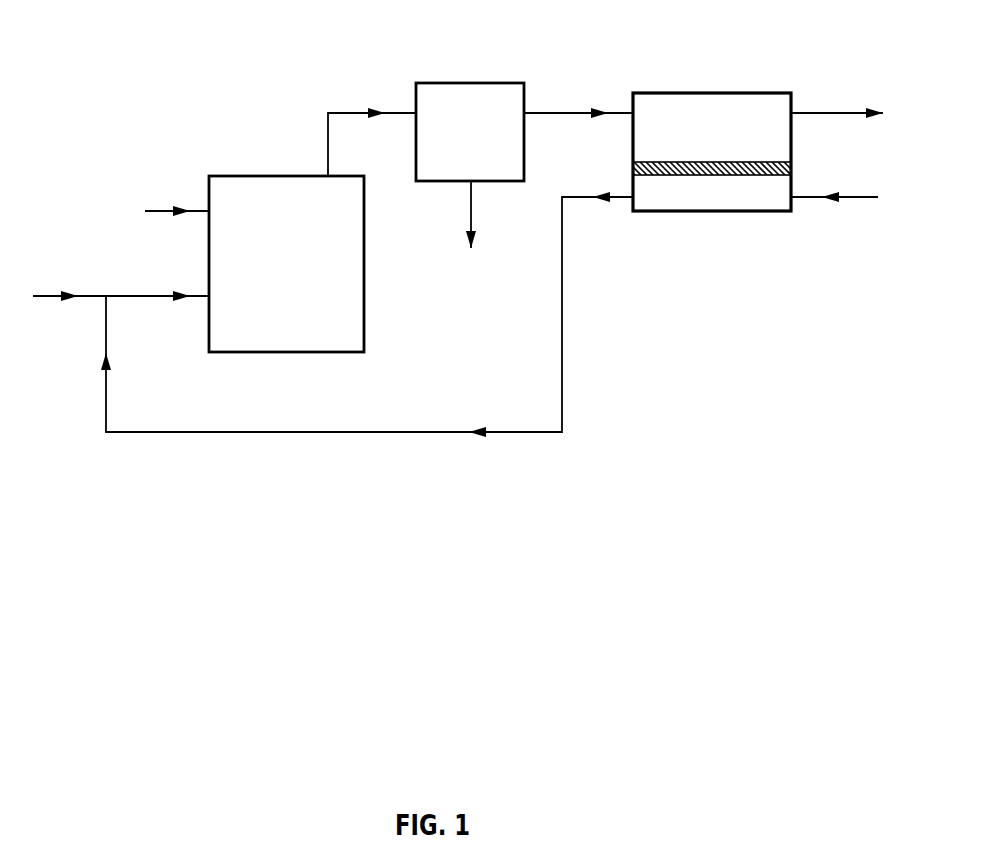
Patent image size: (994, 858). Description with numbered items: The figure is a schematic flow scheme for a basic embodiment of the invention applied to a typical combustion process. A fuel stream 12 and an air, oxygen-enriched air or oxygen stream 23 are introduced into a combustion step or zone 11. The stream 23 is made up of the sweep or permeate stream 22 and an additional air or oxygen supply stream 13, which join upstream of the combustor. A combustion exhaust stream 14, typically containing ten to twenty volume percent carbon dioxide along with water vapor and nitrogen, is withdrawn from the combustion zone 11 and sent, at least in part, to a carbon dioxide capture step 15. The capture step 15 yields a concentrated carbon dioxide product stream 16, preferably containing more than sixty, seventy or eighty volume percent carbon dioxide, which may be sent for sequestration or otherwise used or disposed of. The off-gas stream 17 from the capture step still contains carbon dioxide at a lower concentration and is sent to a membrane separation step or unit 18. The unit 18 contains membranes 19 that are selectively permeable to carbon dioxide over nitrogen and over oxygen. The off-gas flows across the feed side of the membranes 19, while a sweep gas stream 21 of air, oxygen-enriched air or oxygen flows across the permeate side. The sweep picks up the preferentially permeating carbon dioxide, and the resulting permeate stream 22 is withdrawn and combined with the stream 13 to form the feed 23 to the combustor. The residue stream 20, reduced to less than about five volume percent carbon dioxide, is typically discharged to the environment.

The combustion step or zone 11 is at (245, 176).
The fuel stream 12 is at (166, 200).
The additional air or oxygen supply stream 13 is at (64, 284).
The combustion exhaust stream 14 is at (372, 131).
The carbon dioxide capture step 15 is at (482, 83).
The concentrated carbon dioxide product stream 16 is at (471, 233).
The off-gas stream 17 is at (578, 102).
The membrane separation step or unit 18 is at (748, 93).
The membranes 19 is at (791, 163).
The residue stream 20 is at (851, 113).
The sweep gas stream 21 is at (849, 197).
The permeate stream 22 is at (367, 314).
The air or oxygen stream 23 is at (157, 284).